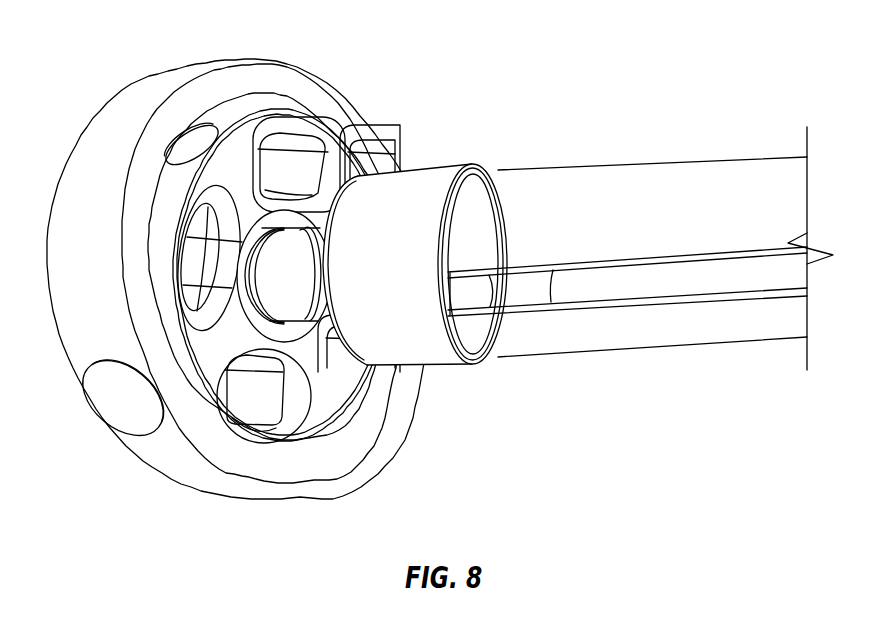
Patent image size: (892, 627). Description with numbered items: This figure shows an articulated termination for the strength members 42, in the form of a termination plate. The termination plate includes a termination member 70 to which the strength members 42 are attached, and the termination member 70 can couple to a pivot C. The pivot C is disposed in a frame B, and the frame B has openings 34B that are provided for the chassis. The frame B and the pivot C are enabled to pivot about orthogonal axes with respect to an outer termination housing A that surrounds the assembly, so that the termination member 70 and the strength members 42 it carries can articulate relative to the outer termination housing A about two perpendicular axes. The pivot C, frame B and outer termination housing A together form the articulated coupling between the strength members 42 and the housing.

The outer termination housing A is at (250, 77).
The frame B is at (243, 153).
The pivot C is at (277, 245).
The termination member 70 is at (422, 190).
The strength members 42 is at (565, 188).
The openings 34B is at (253, 403).